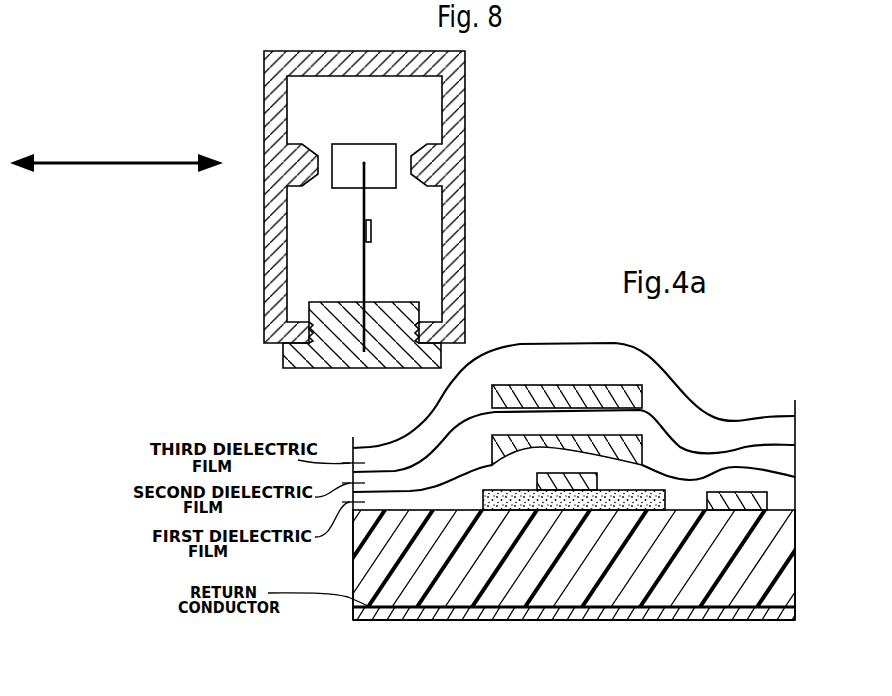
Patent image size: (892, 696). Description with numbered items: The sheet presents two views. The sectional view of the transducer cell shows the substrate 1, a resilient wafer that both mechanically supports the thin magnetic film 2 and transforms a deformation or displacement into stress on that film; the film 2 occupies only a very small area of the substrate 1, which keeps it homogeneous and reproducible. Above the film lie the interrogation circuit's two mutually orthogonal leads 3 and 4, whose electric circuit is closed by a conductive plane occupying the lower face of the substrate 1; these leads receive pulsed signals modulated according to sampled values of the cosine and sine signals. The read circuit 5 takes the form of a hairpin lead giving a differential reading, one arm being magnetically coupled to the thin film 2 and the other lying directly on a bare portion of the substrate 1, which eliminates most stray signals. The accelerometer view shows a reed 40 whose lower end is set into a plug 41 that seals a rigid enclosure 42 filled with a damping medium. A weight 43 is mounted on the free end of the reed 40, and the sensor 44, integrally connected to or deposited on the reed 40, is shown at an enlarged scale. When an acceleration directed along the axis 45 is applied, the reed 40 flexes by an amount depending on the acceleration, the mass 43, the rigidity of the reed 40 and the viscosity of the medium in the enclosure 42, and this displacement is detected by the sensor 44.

In FIG. 4A, the substrate 1 is at (703, 558).
In FIG. 4A, the thin magnetic film 2 is at (600, 513).
In FIG. 4A, the lead 3 is at (592, 387).
In FIG. 4A, the lead 4 is at (595, 441).
In FIG. 4A, the read circuit 5 is at (566, 478).
In FIG. 8, the reed 40 is at (364, 275).
In FIG. 8, the plug 41 is at (364, 352).
In FIG. 8, the rigid enclosure 42 is at (363, 66).
In FIG. 8, the weight 43 is at (372, 162).
In FIG. 8, the sensor 44 is at (371, 232).
In FIG. 8, the axis 45 is at (108, 163).